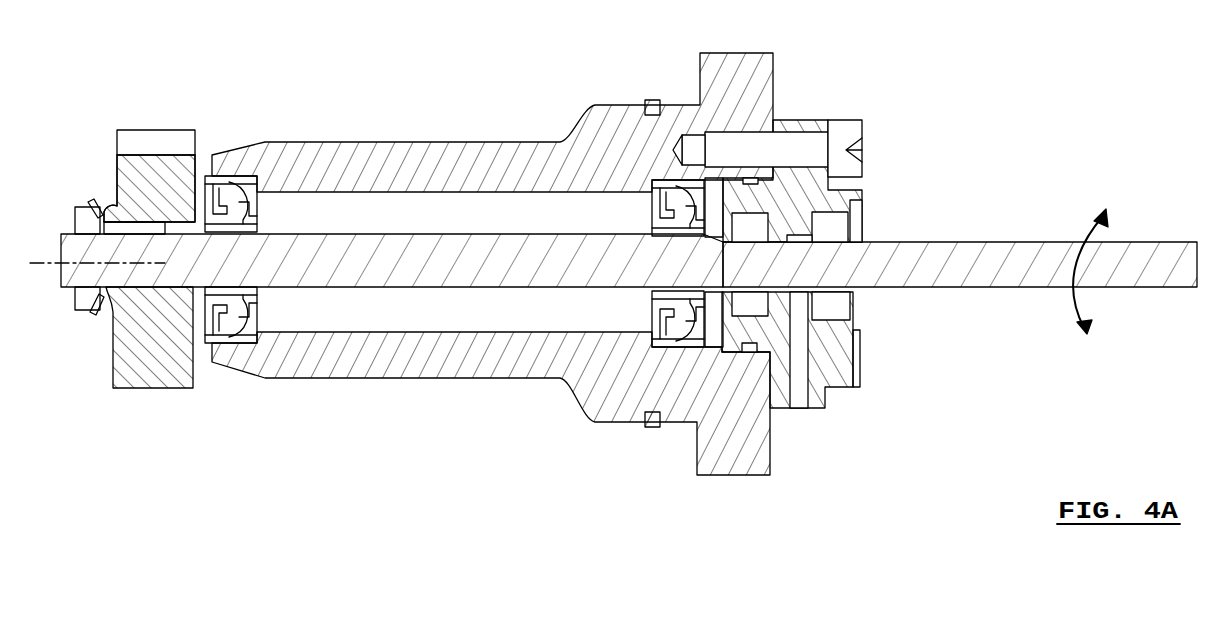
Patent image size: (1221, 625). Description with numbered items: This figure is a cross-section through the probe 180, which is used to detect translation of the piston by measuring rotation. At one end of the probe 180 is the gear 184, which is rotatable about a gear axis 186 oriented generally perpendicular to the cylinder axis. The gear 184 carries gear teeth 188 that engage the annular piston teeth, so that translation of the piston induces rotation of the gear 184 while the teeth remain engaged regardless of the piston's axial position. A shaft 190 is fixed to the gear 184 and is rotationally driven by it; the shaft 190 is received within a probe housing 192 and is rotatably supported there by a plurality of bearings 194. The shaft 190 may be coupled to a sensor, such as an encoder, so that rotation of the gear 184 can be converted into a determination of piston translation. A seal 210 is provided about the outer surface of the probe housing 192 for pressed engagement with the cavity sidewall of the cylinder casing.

The probe 180 is at (364, 86).
The gear 184 is at (172, 170).
The gear axis 186 is at (168, 258).
The gear teeth 188 is at (160, 138).
The shaft 190 is at (931, 243).
The probe housing 192 is at (495, 160).
The bearings 194 is at (232, 200).
The seal 210 is at (652, 100).